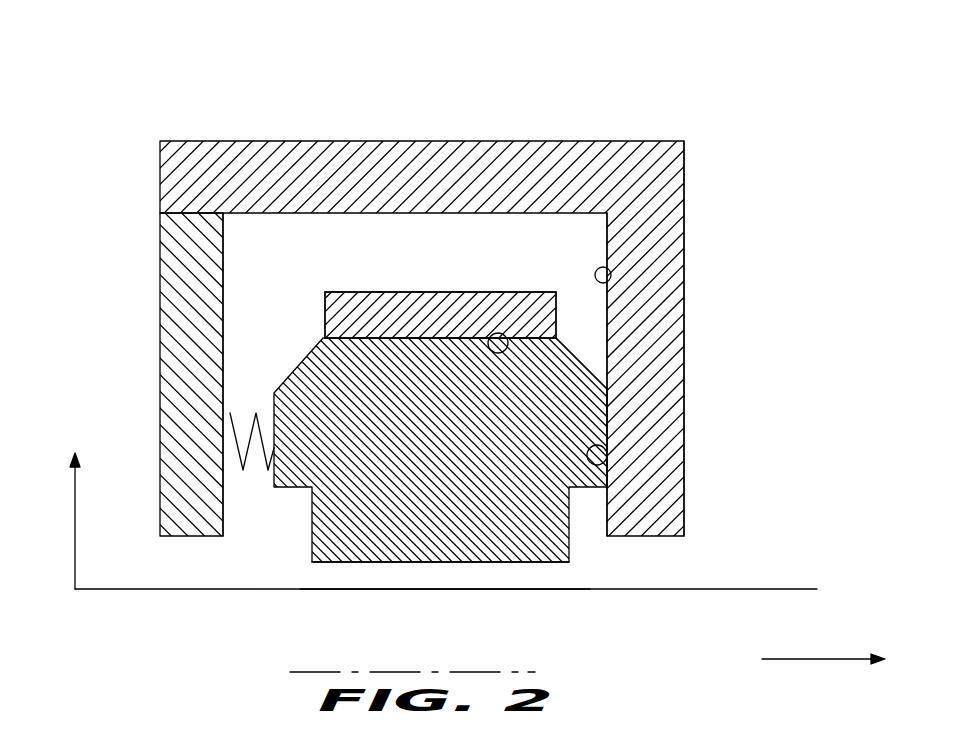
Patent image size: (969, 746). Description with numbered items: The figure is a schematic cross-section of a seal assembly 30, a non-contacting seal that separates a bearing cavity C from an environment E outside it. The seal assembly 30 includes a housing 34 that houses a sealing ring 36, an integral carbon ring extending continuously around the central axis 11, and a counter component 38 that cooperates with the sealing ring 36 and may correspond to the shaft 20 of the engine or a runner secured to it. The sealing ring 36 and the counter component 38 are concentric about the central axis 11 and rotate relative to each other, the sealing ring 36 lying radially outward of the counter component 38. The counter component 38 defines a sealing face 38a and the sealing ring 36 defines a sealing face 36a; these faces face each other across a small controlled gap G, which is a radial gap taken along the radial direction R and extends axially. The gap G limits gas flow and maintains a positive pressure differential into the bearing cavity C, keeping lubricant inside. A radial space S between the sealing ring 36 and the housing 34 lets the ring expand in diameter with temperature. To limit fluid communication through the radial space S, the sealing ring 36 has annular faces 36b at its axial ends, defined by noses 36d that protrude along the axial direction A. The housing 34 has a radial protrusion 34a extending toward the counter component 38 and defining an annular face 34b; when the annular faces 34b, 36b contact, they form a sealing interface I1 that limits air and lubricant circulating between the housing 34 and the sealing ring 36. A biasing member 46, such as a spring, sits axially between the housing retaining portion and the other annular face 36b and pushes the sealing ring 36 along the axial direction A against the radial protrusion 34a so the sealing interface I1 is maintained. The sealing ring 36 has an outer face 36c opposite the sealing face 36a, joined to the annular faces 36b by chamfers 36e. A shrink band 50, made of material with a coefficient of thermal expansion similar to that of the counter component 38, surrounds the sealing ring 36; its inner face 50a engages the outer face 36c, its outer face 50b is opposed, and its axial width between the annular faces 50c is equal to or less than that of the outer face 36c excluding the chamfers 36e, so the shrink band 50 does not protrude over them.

The seal assembly 30 is at (710, 104).
The housing 34 is at (668, 227).
The radial protrusion 34a is at (684, 356).
The annular face 34b is at (160, 300).
The sealing ring 36 is at (340, 512).
The sealing face 36a is at (330, 563).
The annular faces 36b is at (272, 480).
The outer face 36c is at (508, 333).
The noses 36d is at (596, 418).
The chamfers 36e is at (576, 360).
The biasing member 46 is at (252, 370).
The shrink band 50 is at (354, 278).
The inner face 50a is at (467, 340).
The outer face 50b is at (335, 292).
The annular faces 50c is at (325, 322).
The shaft 20 is at (446, 554).
The counter component 38 is at (760, 589).
The sealing face 38a is at (400, 590).
The central axis 11 is at (372, 670).
The radial direction R is at (75, 527).
The axial direction A is at (817, 659).
The gap G is at (552, 582).
The sealing interface I1 is at (586, 524).
The environment E is at (86, 243).
The radial space S is at (425, 257).
The bearing cavity C is at (828, 393).